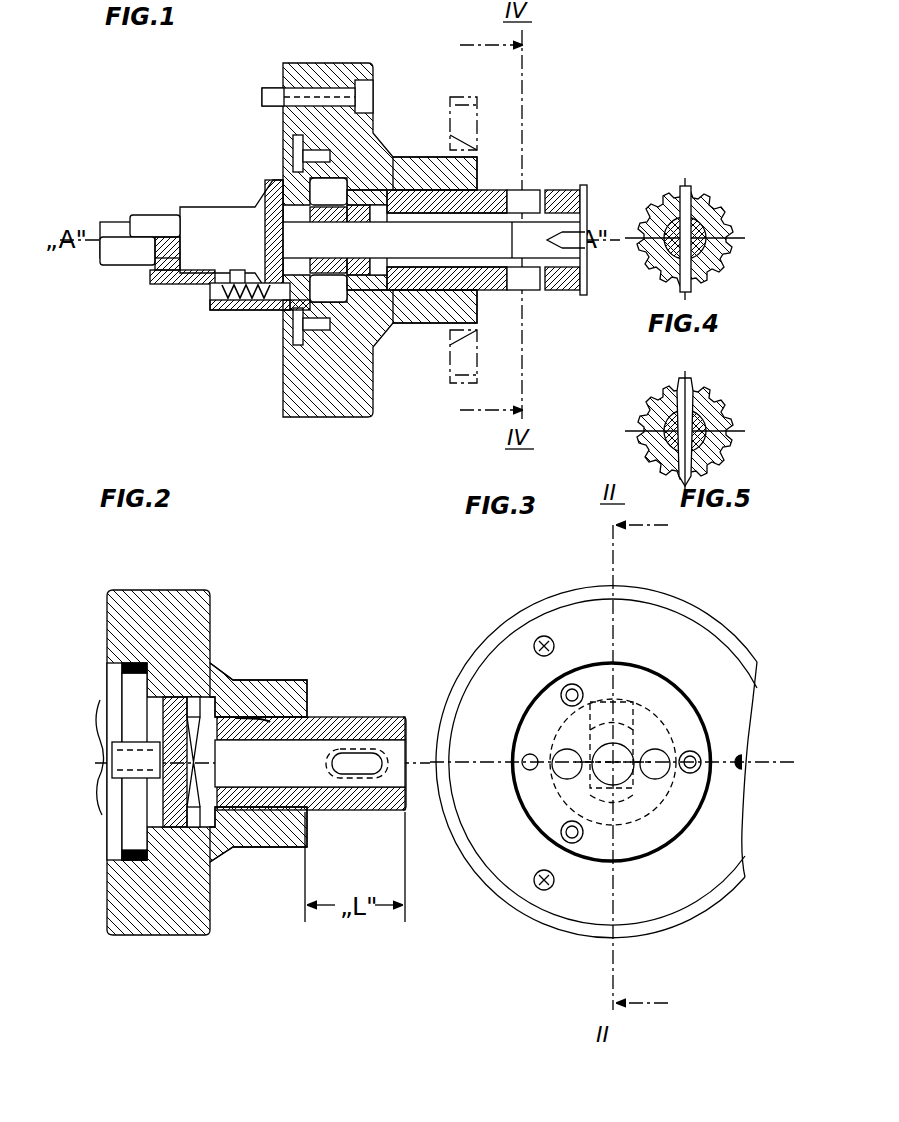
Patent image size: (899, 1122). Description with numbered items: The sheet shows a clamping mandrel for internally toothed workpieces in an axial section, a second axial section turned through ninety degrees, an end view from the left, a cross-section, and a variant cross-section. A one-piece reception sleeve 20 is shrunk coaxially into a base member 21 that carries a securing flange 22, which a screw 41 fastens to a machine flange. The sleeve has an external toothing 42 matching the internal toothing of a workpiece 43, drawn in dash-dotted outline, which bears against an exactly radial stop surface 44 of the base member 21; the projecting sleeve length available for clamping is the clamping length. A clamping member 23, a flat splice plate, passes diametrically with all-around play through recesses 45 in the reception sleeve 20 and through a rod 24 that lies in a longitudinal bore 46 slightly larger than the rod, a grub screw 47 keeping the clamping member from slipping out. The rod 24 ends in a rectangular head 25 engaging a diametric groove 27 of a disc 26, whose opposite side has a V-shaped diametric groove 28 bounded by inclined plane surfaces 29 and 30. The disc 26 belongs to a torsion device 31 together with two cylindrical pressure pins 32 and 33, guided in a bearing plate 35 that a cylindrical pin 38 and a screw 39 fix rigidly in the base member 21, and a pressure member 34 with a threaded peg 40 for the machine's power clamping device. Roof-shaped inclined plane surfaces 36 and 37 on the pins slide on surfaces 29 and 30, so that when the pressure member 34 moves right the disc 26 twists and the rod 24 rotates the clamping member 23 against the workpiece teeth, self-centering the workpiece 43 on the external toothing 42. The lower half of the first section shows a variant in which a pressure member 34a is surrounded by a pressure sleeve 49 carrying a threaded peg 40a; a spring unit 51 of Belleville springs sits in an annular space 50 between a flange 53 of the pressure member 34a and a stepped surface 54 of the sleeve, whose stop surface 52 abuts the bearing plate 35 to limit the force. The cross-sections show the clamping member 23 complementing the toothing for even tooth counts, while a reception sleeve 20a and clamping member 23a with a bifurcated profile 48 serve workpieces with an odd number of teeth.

In FIG. 1, the reception sleeve 20 is at (415, 203).
In FIG. 4, the reception sleeve 20 is at (733, 240).
In FIG. 2, the reception sleeve 20 is at (312, 762).
In FIG. 5, the reception sleeve 20a is at (728, 415).
In FIG. 1, the base member 21 is at (382, 305).
In FIG. 2, the base member 21 is at (205, 688).
In FIG. 1, the securing flange 22 is at (360, 72).
In FIG. 2, the securing flange 22 is at (205, 930).
In FIG. 3, the securing flange 22 is at (592, 620).
In FIG. 1, the clamping member 23 is at (532, 210).
In FIG. 4, the clamping member 23 is at (688, 190).
In FIG. 2, the clamping member 23 is at (355, 753).
In FIG. 5, the clamping member 23a is at (702, 457).
In FIG. 1, the rod 24 is at (455, 245).
In FIG. 4, the rod 24 is at (710, 207).
In FIG. 2, the rod 24 is at (330, 742).
In FIG. 3, the rod 24 is at (625, 782).
In FIG. 1, the head 25 is at (377, 222).
In FIG. 2, the head 25 is at (225, 848).
In FIG. 3, the head 25 is at (628, 740).
In FIG. 1, the disc 26 is at (428, 325).
In FIG. 2, the disc 26 is at (215, 700).
In FIG. 2, the diametric groove 27 is at (195, 712).
In FIG. 3, the diametric groove 27 is at (620, 716).
In FIG. 1, the V-shaped diametric groove 28 is at (305, 247).
In FIG. 3, the V-shaped diametric groove 28 is at (662, 779).
In FIG. 2, the inclined plane surface 29 is at (255, 720).
In FIG. 2, the inclined plane surface 30 is at (232, 862).
In FIG. 1, the torsion device 31 is at (262, 186).
In FIG. 1, the pressure pin 32 is at (320, 190).
In FIG. 2, the pressure pin 32 is at (165, 752).
In FIG. 3, the pressure pin 32 is at (662, 754).
In FIG. 1, the pressure pin 33 is at (285, 300).
In FIG. 2, the pressure pin 33 is at (152, 795).
In FIG. 3, the pressure pin 33 is at (560, 780).
In FIG. 1, the pressure member 34 is at (180, 235).
In FIG. 1, the pressure member 34a is at (210, 282).
In FIG. 1, the bearing plate 35 is at (195, 225).
In FIG. 2, the bearing plate 35 is at (140, 710).
In FIG. 3, the bearing plate 35 is at (530, 774).
In FIG. 2, the inclined plane surface 36 is at (130, 760).
In FIG. 2, the inclined plane surface 37 is at (135, 772).
In FIG. 1, the cylindrical pin 38 is at (300, 332).
In FIG. 1, the screw 39 is at (298, 150).
In FIG. 3, the screw 39 is at (565, 692).
In FIG. 1, the threaded peg 40 is at (140, 220).
In FIG. 1, the threaded peg 40a is at (110, 265).
In FIG. 1, the screw 41 is at (318, 97).
In FIG. 3, the screw 41 is at (545, 638).
In FIG. 1, the external toothing 42 is at (522, 197).
In FIG. 4, the external toothing 42 is at (662, 283).
In FIG. 2, the external toothing 42 is at (395, 717).
In FIG. 1, the workpiece 43 is at (500, 135).
In FIG. 1, the stop surface 44 is at (480, 158).
In FIG. 2, the stop surface 44 is at (309, 827).
In FIG. 4, the recess 45 is at (667, 202).
In FIG. 4, the longitudinal bore 46 is at (652, 230).
In FIG. 1, the grub screw 47 is at (560, 242).
In FIG. 5, the bifurcated profile 48 is at (692, 388).
In FIG. 1, the pressure sleeve 49 is at (160, 275).
In FIG. 1, the annular space 50 is at (258, 300).
In FIG. 1, the spring unit 51 is at (232, 292).
In FIG. 1, the stop surface 52 is at (320, 400).
In FIG. 1, the flange 53 is at (265, 286).
In FIG. 1, the stepped surface 54 is at (237, 275).